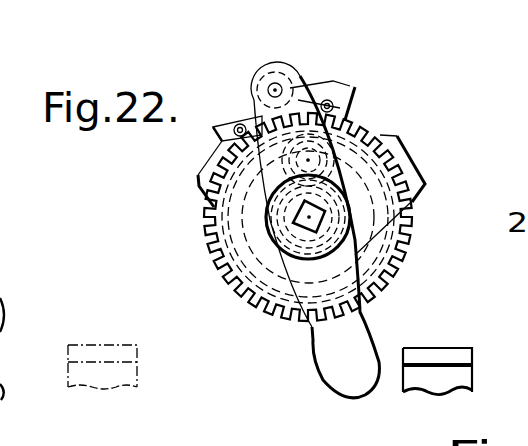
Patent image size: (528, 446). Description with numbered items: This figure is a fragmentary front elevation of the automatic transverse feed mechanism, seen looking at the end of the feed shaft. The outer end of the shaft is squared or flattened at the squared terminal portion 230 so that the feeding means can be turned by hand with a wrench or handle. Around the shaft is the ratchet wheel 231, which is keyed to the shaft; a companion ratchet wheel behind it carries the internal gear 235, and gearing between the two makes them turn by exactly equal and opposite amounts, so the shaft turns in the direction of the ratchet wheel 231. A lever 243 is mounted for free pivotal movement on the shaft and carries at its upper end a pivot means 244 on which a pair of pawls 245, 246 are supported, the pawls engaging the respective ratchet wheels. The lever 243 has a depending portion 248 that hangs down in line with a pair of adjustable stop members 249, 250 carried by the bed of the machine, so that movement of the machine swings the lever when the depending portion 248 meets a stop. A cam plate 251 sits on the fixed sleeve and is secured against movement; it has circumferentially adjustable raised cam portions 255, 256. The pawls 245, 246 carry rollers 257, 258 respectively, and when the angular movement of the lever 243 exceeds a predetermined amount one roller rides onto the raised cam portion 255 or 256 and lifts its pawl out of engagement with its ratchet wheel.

The squared terminal portion 230 is at (300, 220).
The ratchet wheel 231 is at (208, 218).
The internal gear 235 is at (396, 253).
The lever 243 is at (288, 70).
The pivot means 244 is at (276, 88).
The pawl 245 is at (328, 100).
The pawl 246 is at (247, 101).
The depending portion 248 is at (325, 377).
The adjustable stop member 249 is at (120, 374).
The adjustable stop member 250 is at (460, 377).
The cam plate 251 is at (367, 125).
The raised cam portion 255 is at (210, 153).
The raised cam portion 256 is at (403, 155).
The roller 257 is at (330, 88).
The roller 258 is at (237, 125).